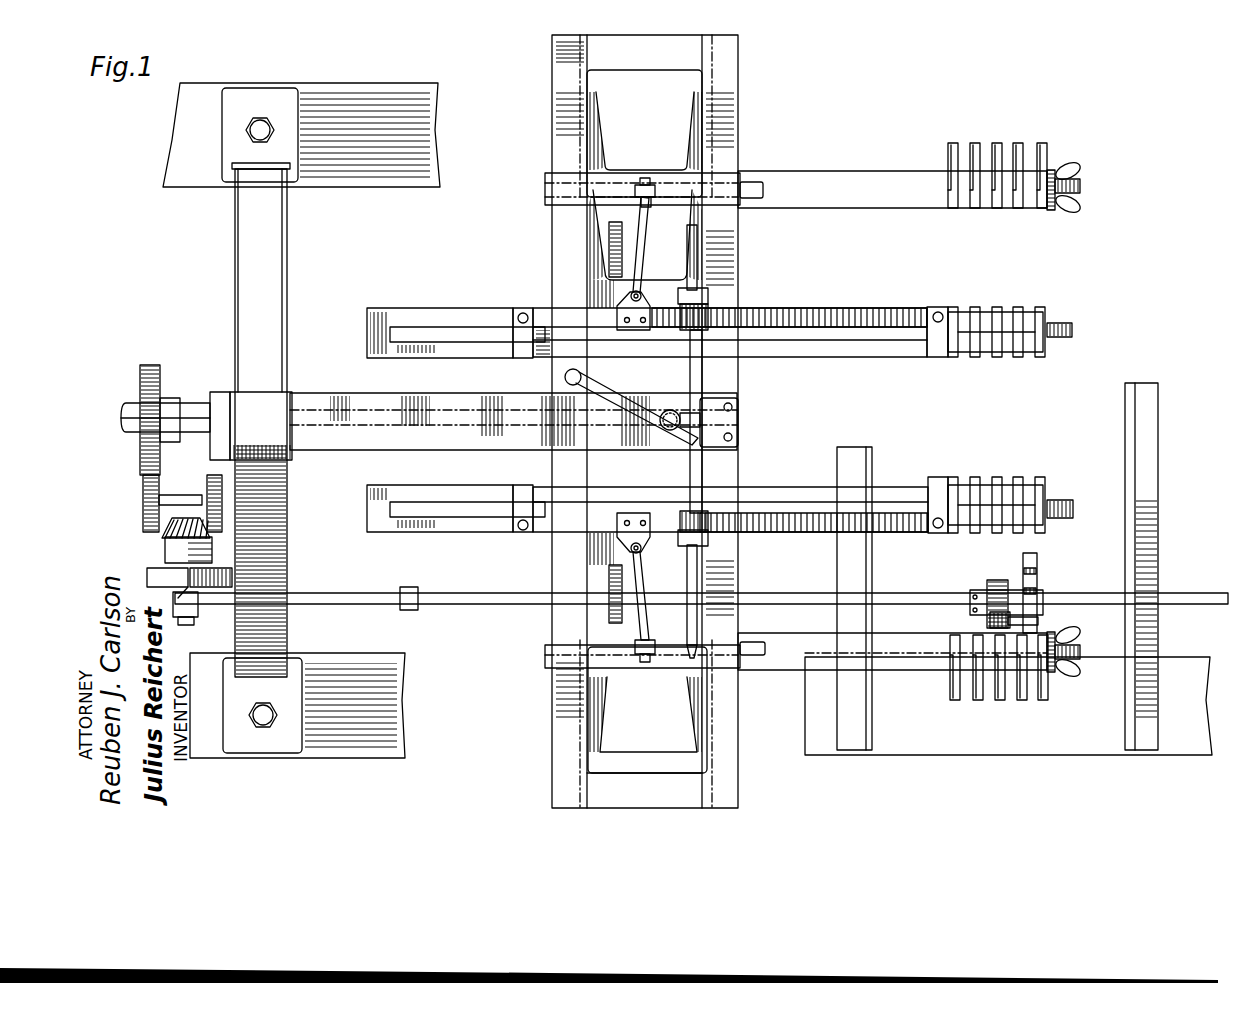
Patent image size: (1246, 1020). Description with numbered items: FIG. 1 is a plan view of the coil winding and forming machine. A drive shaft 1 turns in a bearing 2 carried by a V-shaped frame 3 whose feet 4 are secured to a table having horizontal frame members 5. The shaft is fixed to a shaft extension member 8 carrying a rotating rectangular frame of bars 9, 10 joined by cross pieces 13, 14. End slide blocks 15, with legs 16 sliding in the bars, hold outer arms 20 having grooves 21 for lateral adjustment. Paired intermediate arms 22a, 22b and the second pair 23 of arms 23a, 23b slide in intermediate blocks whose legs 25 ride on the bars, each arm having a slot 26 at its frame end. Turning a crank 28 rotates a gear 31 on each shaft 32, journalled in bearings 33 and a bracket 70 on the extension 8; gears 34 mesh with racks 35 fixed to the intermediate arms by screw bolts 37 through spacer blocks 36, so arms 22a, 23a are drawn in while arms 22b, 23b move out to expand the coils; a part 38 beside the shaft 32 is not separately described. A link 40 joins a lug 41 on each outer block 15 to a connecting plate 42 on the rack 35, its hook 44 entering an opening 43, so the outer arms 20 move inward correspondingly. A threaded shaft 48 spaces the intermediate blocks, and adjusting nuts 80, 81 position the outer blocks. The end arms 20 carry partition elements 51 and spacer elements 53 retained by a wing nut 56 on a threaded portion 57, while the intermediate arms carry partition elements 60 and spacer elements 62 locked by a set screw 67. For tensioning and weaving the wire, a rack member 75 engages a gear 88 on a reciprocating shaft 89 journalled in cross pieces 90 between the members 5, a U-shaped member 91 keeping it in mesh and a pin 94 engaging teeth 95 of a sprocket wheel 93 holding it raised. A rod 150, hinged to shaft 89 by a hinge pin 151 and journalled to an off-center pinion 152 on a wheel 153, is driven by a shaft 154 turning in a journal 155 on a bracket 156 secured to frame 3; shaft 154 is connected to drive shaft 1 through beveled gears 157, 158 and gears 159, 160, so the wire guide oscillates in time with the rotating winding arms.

The drive shaft 1 is at (195, 398).
The bearing 2 is at (214, 392).
The V-shaped frame 3 is at (268, 262).
The feet 4 is at (292, 100).
The horizontal frame members 5 is at (372, 88).
The shaft extension member 8 is at (380, 448).
The frame bar 9 is at (556, 86).
The frame bar 10 is at (735, 82).
The cross piece 13 is at (660, 792).
The cross piece 14 is at (668, 64).
The end slide block 15 is at (617, 172).
The legs 16 is at (592, 128).
The outer arm 20 is at (873, 178).
The longitudinally extending grooves 21 is at (770, 186).
The intermediate arm 22a is at (395, 533).
The intermediate arm 22b is at (798, 488).
The upper rack bar 23 is at (785, 357).
The intermediate arm 23a is at (417, 310).
The intermediate arm 23b is at (850, 357).
The legs 25 is at (605, 622).
The longitudinally extending slot 26 is at (430, 340).
The crank 28 is at (618, 390).
The gear 31 is at (712, 428).
The shaft 32 is at (702, 374).
The bearings 33 is at (708, 298).
The gear 34 is at (708, 316).
The rack member 35 is at (845, 310).
The spacer blocks 36 is at (525, 358).
The screw bolts 37 is at (518, 316).
The rod 38 is at (698, 264).
The link 40 is at (700, 222).
The lug 41 is at (660, 190).
The connecting plate 42 is at (620, 314).
The opening 43 is at (630, 297).
The hook 44 is at (633, 292).
The shaft 48 is at (609, 250).
The partition elements 51 is at (955, 143).
The spacer elements 53 is at (1005, 150).
The wing nut 56 is at (1080, 173).
The threaded portion 57 is at (1082, 190).
The partition elements 60 is at (1045, 352).
The spacer elements 62 is at (1022, 360).
The set screw 67 is at (1072, 330).
The bracket 70 is at (740, 436).
The rack member 75 is at (988, 622).
The threaded adjusting nut 80 is at (652, 178).
The threaded adjusting nut 81 is at (650, 200).
The gear 88 is at (1000, 580).
The reciprocating shaft 89 is at (1095, 598).
The cross pieces 90 is at (1158, 478).
The U-shaped member 91 is at (983, 590).
The sprocket wheel 93 is at (1037, 562).
The pin 94 is at (1038, 620).
The teeth 95 is at (1037, 574).
The rod 150 is at (330, 594).
The hinge pin 151 is at (412, 610).
The pinion 152 is at (190, 622).
The wheel 153 is at (147, 578).
The shaft 154 is at (180, 518).
The journal 155 is at (165, 550).
The bracket 156 is at (232, 535).
The beveled gear 157 is at (168, 530).
The beveled gear 158 is at (225, 490).
The gear 159 is at (142, 492).
The gear 160 is at (140, 378).